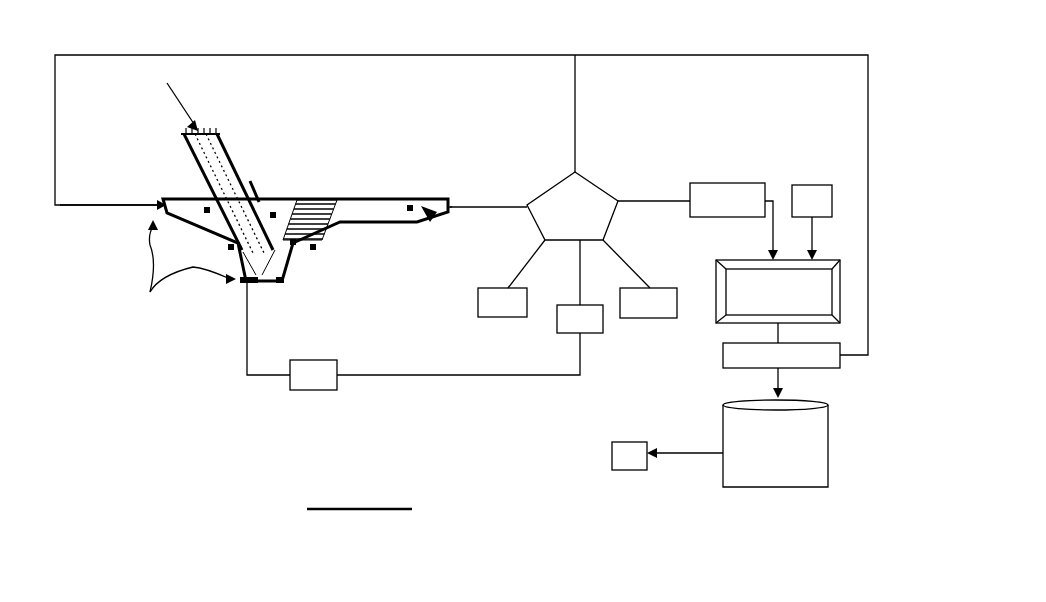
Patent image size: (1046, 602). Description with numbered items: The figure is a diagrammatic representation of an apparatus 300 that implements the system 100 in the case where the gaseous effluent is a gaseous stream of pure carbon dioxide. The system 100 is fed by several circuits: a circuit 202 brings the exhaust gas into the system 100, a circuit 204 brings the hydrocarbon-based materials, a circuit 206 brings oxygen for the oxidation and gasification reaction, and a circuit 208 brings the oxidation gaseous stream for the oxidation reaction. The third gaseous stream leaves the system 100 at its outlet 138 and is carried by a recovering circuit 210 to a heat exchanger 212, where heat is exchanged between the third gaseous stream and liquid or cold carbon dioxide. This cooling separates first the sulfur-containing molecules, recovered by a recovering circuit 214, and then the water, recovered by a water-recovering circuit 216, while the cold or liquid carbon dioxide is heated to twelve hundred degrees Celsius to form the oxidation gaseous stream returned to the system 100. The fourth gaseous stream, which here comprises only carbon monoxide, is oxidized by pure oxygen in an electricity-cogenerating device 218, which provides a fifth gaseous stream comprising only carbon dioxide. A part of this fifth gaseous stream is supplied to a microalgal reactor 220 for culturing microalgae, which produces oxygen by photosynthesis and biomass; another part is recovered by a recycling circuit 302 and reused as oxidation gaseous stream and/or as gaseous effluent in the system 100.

The system 100 is at (305, 212).
The reactor outlet 138 is at (445, 198).
The circuit for bringing the exhaust gas 202 is at (118, 204).
The circuit for bringing the hydrocarbon-based materials 204 is at (190, 120).
The circuit for bringing oxygen 206 is at (176, 270).
The circuit for bringing the oxidation gaseous stream 208 is at (382, 373).
The recovering circuit 210 is at (490, 205).
The heat exchanger 212 is at (588, 170).
The recovering circuit 214 is at (526, 258).
The water-recovering circuit 216 is at (634, 264).
The electricity-cogenerating device 218 is at (722, 325).
The microalgal reactor 220 is at (783, 488).
The apparatus 300 is at (144, 400).
The recycling circuit 302 is at (733, 55).